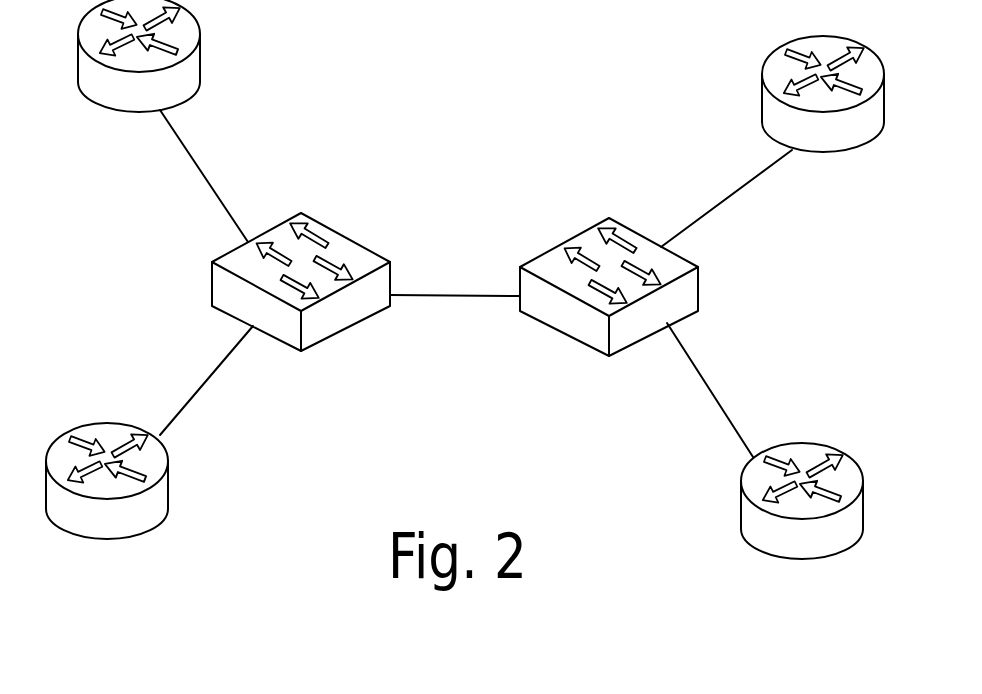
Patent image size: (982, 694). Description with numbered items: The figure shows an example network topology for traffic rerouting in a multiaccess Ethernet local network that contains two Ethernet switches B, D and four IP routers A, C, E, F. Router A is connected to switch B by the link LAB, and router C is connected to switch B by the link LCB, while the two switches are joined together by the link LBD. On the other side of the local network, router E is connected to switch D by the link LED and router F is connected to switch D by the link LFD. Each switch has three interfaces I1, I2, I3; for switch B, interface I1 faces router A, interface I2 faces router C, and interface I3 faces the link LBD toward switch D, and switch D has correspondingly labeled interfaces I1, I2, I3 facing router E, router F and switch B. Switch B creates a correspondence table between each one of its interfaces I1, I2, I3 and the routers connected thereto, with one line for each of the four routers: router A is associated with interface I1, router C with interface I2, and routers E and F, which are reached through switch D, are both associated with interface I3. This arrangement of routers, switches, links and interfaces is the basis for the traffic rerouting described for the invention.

The router A is at (139, 74).
The switch B is at (301, 298).
The router C is at (107, 495).
The switch D is at (609, 303).
The router E is at (823, 112).
The router F is at (794, 511).
The link LAB is at (193, 155).
The link LCB is at (204, 386).
The link LBD is at (442, 294).
The link LED is at (711, 210).
The link LFD is at (713, 395).
The interface I1 is at (461, 214).
The interface I2 is at (443, 346).
The interface I3 is at (455, 317).